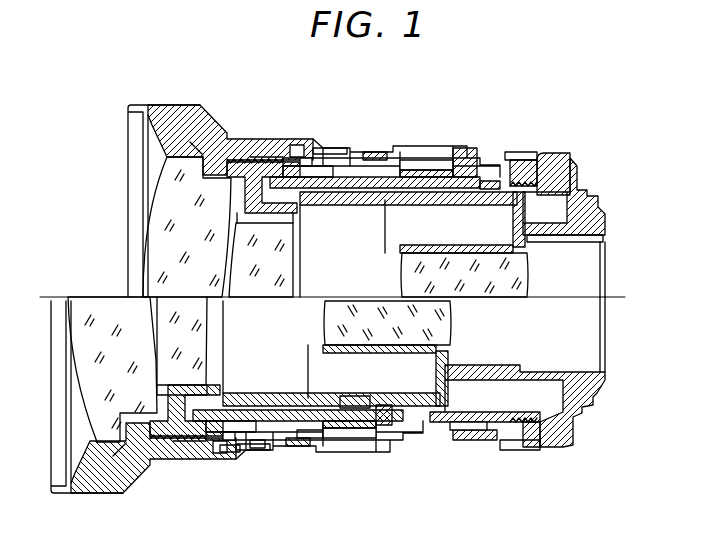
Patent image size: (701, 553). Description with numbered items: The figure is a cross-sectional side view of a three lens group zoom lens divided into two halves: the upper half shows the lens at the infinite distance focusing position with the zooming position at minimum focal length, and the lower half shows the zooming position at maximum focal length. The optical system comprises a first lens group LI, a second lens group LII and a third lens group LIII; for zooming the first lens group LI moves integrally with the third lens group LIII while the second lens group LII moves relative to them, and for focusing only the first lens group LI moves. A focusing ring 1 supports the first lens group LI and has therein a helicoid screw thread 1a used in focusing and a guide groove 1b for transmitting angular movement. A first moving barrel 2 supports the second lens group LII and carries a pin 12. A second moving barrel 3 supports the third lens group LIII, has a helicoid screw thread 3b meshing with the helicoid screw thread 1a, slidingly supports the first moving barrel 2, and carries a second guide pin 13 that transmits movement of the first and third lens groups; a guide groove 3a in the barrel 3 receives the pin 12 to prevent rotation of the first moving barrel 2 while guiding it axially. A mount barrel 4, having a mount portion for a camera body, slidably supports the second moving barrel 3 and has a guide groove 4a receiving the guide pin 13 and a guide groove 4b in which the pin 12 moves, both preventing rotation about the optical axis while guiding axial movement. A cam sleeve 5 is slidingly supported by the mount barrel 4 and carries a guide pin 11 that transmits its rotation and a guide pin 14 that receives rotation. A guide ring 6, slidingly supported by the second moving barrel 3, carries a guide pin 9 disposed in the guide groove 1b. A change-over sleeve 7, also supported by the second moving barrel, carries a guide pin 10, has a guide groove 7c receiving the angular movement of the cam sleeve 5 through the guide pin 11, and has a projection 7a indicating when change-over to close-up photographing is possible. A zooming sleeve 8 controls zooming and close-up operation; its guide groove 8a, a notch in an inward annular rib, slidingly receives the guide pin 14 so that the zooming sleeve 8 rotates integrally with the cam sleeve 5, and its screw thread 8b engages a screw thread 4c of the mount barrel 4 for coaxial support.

The focusing ring 1 is at (163, 112).
The helicoid screw thread 1a is at (272, 140).
The guide groove 1b is at (300, 139).
The first moving sleeve 2 is at (373, 152).
The second moving sleeve 3 is at (562, 165).
The guide groove 3a is at (353, 408).
The helicoid screw thread 3b is at (238, 139).
The mount barrel 4 is at (577, 168).
The guide groove 4a is at (445, 165).
The guide groove 4b is at (313, 438).
The screw thread 4c is at (558, 294).
The cam sleeve 5 is at (432, 160).
The guide ring 6 is at (330, 139).
The change-over sleeve 7 is at (408, 150).
The projection 7a is at (228, 452).
The guide groove 7c is at (380, 153).
The zooming sleeve 8 is at (458, 155).
The guide groove 8a is at (450, 430).
The screw thread 8b is at (523, 302).
The guide pin 9 is at (310, 150).
The guide pin 10 is at (258, 448).
The guide pin 11 is at (335, 148).
The pin 12 is at (385, 425).
The second guide pin 13 is at (488, 181).
The guide pin 14 is at (485, 452).
The first lens group LI is at (160, 203).
The second lens group LII is at (233, 262).
The third lens group LIII is at (455, 262).